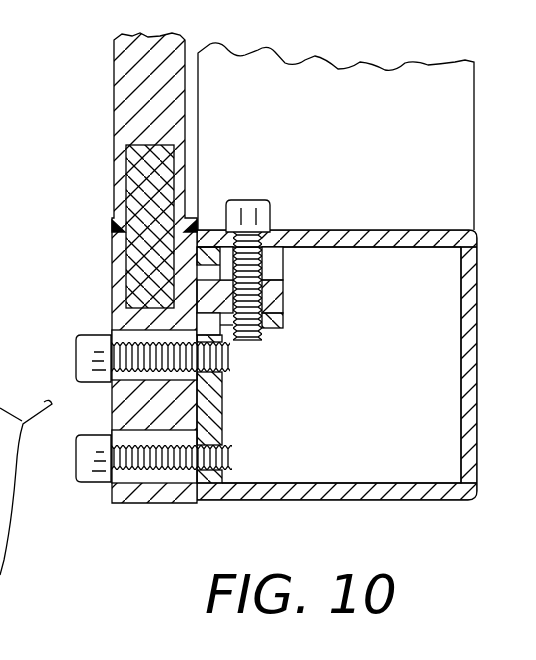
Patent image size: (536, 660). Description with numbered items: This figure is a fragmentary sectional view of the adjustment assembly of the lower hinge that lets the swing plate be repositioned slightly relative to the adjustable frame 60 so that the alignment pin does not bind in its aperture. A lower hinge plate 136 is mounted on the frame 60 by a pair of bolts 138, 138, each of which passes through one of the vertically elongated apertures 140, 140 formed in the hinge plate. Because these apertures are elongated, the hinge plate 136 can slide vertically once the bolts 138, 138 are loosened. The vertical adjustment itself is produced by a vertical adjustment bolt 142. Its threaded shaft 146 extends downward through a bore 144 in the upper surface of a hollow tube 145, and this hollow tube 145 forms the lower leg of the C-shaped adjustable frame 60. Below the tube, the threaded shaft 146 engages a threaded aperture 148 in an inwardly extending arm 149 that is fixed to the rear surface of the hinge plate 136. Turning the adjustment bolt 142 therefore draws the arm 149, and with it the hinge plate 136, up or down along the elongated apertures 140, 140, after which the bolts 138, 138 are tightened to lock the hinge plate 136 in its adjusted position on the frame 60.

The adjustable frame 60 is at (336, 136).
The lower hinge plate 136 is at (163, 505).
The bolts 138 is at (88, 336).
The vertically elongated apertures 140 is at (175, 380).
The vertical adjustment bolt 142 is at (244, 200).
The bore 144 is at (282, 232).
The hollow tube 145 is at (340, 229).
The threaded shaft 146 is at (262, 265).
The threaded aperture 148 is at (283, 290).
The inwardly extending arm 149 is at (283, 318).